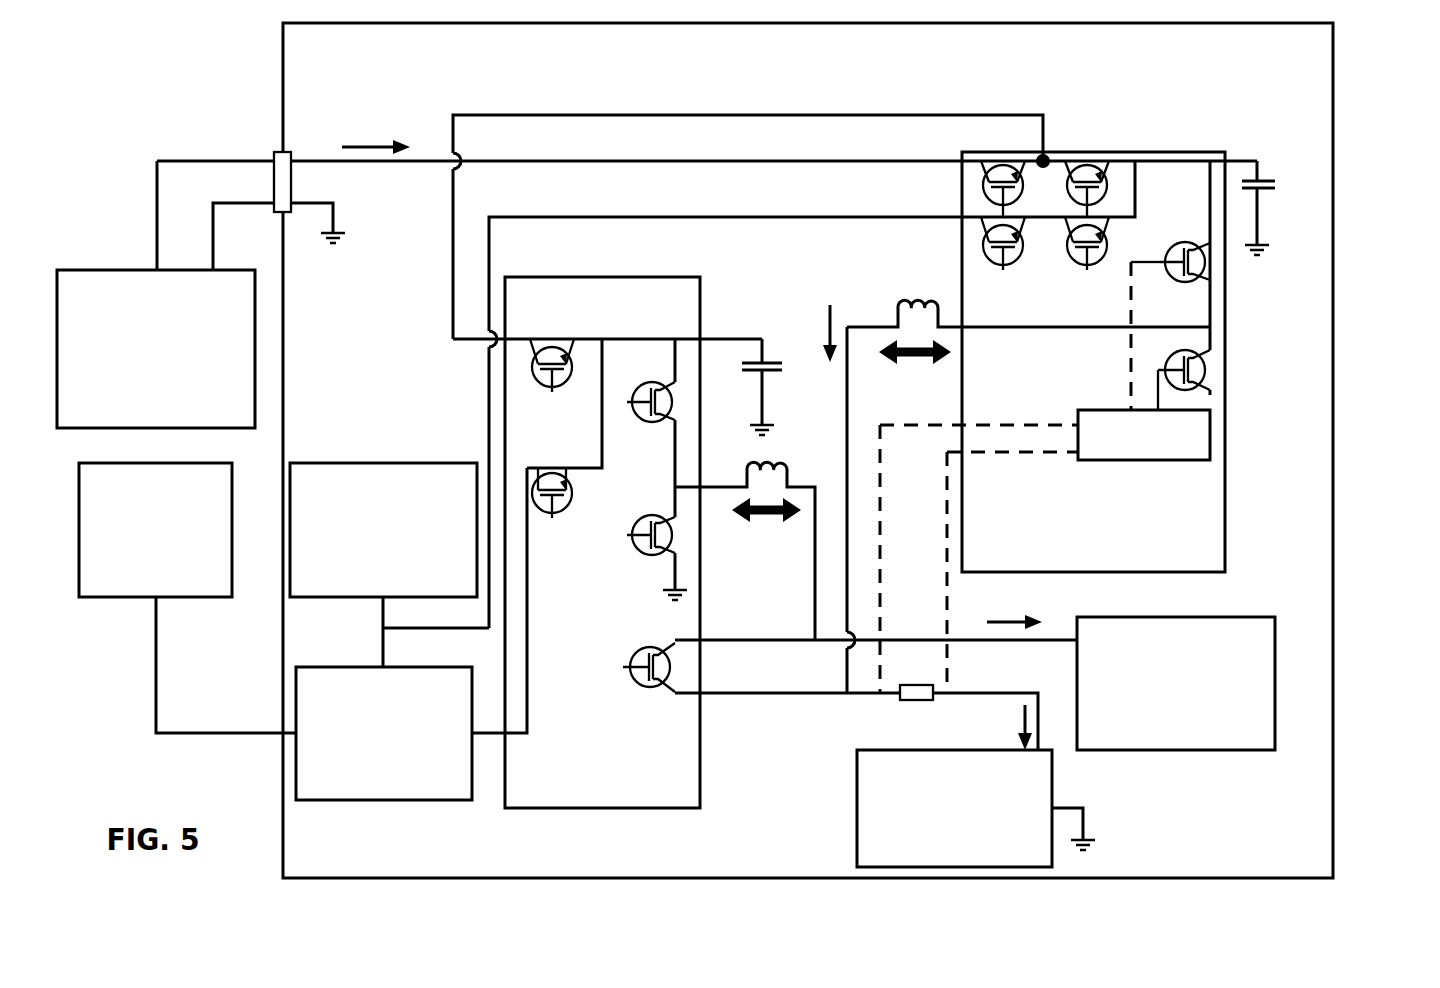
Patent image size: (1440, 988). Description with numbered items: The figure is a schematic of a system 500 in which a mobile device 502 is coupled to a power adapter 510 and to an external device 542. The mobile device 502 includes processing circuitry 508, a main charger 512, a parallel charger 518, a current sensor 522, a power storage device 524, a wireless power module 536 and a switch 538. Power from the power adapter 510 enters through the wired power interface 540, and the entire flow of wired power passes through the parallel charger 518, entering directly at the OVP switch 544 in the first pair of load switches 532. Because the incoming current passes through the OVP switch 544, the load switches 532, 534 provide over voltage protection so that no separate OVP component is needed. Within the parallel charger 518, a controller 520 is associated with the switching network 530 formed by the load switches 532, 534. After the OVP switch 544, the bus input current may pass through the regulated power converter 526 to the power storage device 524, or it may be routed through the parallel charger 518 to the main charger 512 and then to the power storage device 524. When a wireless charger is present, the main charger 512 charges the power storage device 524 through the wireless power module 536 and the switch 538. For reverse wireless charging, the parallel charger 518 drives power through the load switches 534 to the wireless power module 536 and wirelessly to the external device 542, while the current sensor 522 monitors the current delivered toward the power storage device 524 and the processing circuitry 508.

The system 500 is at (1357, 118).
The mobile device 502 is at (787, 84).
The processing circuitry 508 is at (1195, 723).
The power adapter 510 is at (137, 390).
The main charger 512 is at (583, 804).
The parallel charger 518 is at (1099, 303).
The controller 520 is at (1124, 459).
The current sensor 522 is at (912, 700).
The power storage device 524 is at (935, 863).
The regulated power converter 526 is at (1218, 327).
The switching transistor network 530 is at (978, 105).
The first pair of load switches 532 is at (958, 170).
The load switches 534 is at (958, 228).
The wireless power module 536 is at (417, 570).
The switch 538 is at (402, 761).
The wired power interface 540 is at (276, 152).
The external device 542 is at (174, 570).
The OVP switch 544 is at (1002, 160).